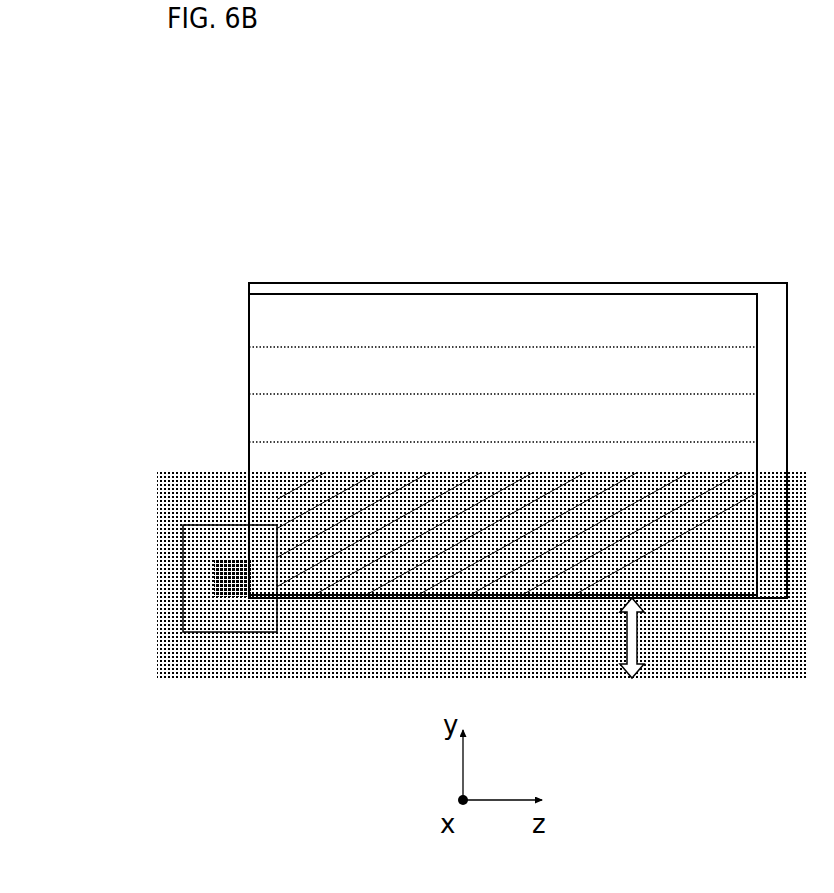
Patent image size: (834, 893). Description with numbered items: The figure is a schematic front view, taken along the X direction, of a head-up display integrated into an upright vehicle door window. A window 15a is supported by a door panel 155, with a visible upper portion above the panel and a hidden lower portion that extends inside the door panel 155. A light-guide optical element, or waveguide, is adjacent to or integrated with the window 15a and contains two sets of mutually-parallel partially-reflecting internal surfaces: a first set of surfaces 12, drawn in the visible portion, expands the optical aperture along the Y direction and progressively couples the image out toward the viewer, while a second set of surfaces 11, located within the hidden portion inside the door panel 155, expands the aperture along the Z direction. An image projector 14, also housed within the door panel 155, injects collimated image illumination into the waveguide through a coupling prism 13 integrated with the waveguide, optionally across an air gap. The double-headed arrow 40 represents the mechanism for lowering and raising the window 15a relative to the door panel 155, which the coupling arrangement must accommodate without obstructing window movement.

The door panel 155 is at (155, 576).
The partially-reflecting internal surfaces 11 is at (657, 553).
The window 15a is at (497, 427).
The partially-reflecting internal surfaces 12 is at (337, 346).
The image projector 14 is at (225, 596).
The coupling prism 13 is at (213, 558).
The arrow 40 is at (623, 668).